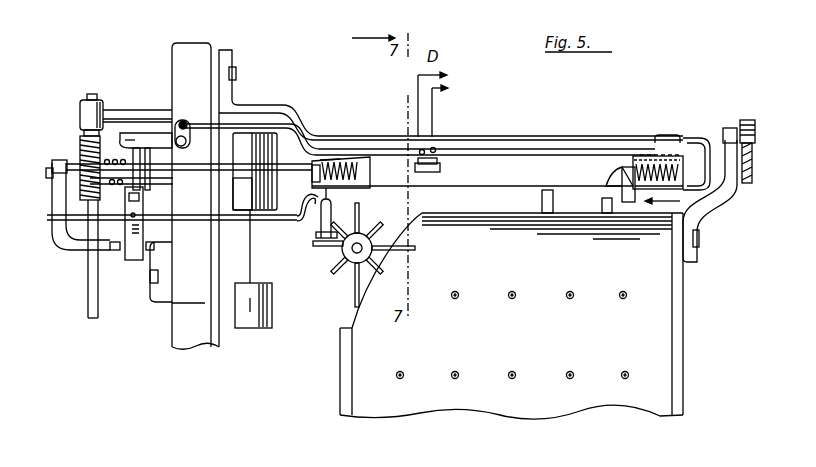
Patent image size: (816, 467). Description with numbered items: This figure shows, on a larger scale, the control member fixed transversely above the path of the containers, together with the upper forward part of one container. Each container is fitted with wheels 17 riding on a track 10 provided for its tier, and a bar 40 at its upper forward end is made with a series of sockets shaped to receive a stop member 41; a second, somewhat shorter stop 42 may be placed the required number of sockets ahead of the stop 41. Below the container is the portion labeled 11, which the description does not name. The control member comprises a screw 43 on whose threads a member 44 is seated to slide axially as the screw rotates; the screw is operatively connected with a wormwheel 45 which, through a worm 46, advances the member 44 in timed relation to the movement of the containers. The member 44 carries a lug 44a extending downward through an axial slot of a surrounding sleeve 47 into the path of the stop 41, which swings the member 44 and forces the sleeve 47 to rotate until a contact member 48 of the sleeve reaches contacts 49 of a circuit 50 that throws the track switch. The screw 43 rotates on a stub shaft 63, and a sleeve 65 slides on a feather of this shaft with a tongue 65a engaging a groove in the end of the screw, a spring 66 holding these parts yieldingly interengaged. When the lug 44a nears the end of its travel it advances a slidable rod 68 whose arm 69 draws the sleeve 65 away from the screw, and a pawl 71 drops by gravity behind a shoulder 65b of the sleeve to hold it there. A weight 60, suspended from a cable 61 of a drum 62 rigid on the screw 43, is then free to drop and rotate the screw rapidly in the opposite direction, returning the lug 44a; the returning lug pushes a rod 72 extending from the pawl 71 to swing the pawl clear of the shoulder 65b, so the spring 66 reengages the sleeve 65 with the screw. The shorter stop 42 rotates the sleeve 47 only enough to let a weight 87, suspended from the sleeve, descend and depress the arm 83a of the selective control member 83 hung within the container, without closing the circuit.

The track 10 is at (747, 186).
The bed plate 11 is at (567, 395).
The wheels 17 is at (747, 122).
The bar 40 is at (435, 215).
The stop member 41 is at (541, 200).
The second stop 42 is at (601, 204).
The screw 43 is at (325, 167).
The member 44 is at (630, 170).
The lug 44a is at (626, 178).
The wormwheel 45 is at (82, 152).
The worm 46 is at (80, 162).
The sleeve 47 is at (485, 172).
The contact member 48 is at (434, 163).
The contacts 49 is at (430, 151).
The circuit 50 is at (459, 80).
The weight 60 is at (258, 328).
The cable 61 is at (252, 243).
The drum 62 is at (241, 140).
The stub shaft 63 is at (133, 175).
The sleeve 65 is at (150, 170).
The tongue 65a is at (153, 172).
The shoulder 65b is at (143, 172).
The spring 66 is at (122, 184).
The slidable rod 68 is at (291, 224).
The arm 69 is at (134, 250).
The pawl 71 is at (170, 132).
The rod 72 is at (267, 123).
The selective control member 83 is at (352, 258).
The arm 83a is at (333, 247).
The weight 87 is at (325, 215).